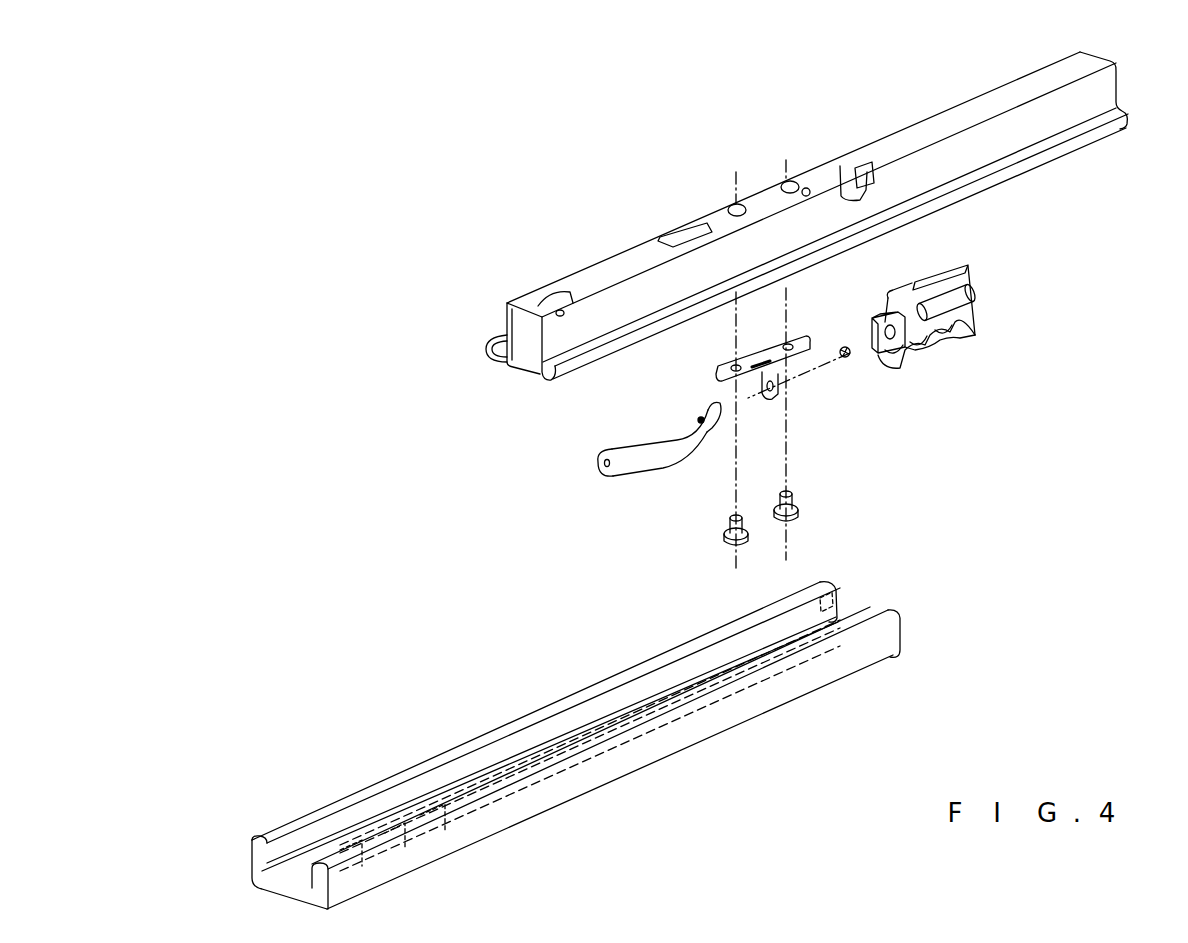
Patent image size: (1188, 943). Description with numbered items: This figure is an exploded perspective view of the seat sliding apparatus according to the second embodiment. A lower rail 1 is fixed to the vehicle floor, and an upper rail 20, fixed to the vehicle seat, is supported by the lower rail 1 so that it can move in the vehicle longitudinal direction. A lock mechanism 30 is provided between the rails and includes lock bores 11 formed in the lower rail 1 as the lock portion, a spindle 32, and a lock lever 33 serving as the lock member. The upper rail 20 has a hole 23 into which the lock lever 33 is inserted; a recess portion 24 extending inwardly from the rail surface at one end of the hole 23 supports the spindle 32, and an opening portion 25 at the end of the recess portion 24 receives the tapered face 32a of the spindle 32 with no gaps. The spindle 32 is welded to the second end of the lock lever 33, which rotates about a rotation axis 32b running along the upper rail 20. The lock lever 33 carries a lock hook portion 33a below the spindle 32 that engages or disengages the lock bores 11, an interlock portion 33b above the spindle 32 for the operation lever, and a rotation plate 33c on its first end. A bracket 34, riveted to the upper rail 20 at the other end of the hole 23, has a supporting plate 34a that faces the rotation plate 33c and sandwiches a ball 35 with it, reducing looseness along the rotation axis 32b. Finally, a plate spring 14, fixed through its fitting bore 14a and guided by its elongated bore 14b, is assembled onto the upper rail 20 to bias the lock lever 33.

The lower rail 1 is at (598, 733).
The lock bores 11 is at (850, 613).
The plate spring 14 is at (634, 451).
The fitting bore 14a is at (607, 452).
The elongated bore 14b is at (710, 408).
The upper rail 20 is at (1038, 82).
The hole 23 is at (807, 186).
The recess portion 24 is at (855, 165).
The opening portion 25 is at (870, 167).
The lock mechanism 30 is at (993, 305).
The spindle 32 is at (997, 299).
The tapered face 32a is at (988, 284).
The rotation axis 32b is at (1005, 285).
The lock lever 33 is at (928, 306).
The lock hook portion 33a is at (953, 342).
The interlock portion 33b is at (940, 267).
The rotation plate 33c is at (872, 325).
The bracket 34 is at (776, 353).
The supporting plate 34a is at (783, 377).
The ball 35 is at (850, 360).